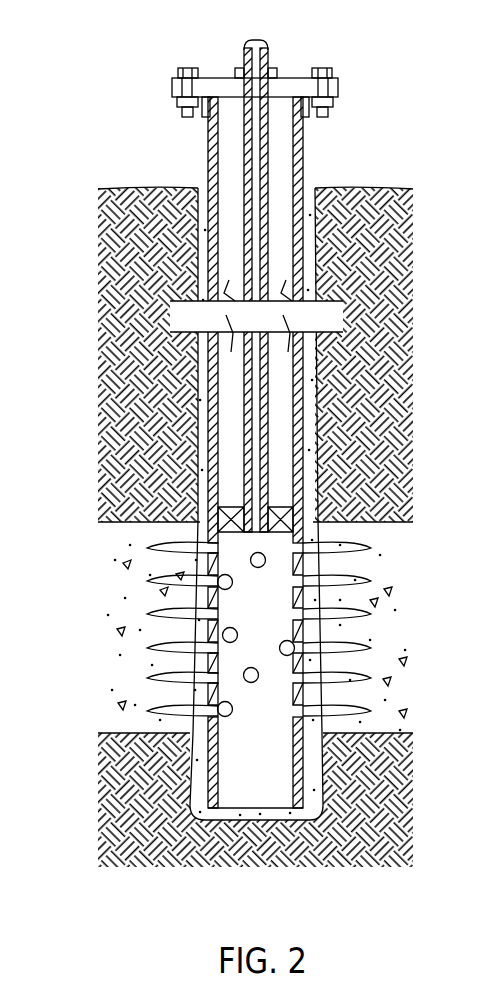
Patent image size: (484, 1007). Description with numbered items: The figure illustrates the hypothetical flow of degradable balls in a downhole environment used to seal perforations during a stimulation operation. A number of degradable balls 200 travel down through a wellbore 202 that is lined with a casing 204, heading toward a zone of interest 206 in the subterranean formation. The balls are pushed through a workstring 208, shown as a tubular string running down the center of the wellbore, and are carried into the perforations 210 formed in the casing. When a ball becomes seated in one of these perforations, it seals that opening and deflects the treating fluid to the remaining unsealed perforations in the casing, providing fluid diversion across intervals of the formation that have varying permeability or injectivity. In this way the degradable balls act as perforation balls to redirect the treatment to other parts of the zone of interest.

The degradable balls 200 is at (251, 675).
The wellbore 202 is at (207, 243).
The casing 204 is at (200, 287).
The zone of interest 206 is at (125, 565).
The workstring 208 is at (252, 467).
The perforations 210 is at (200, 617).